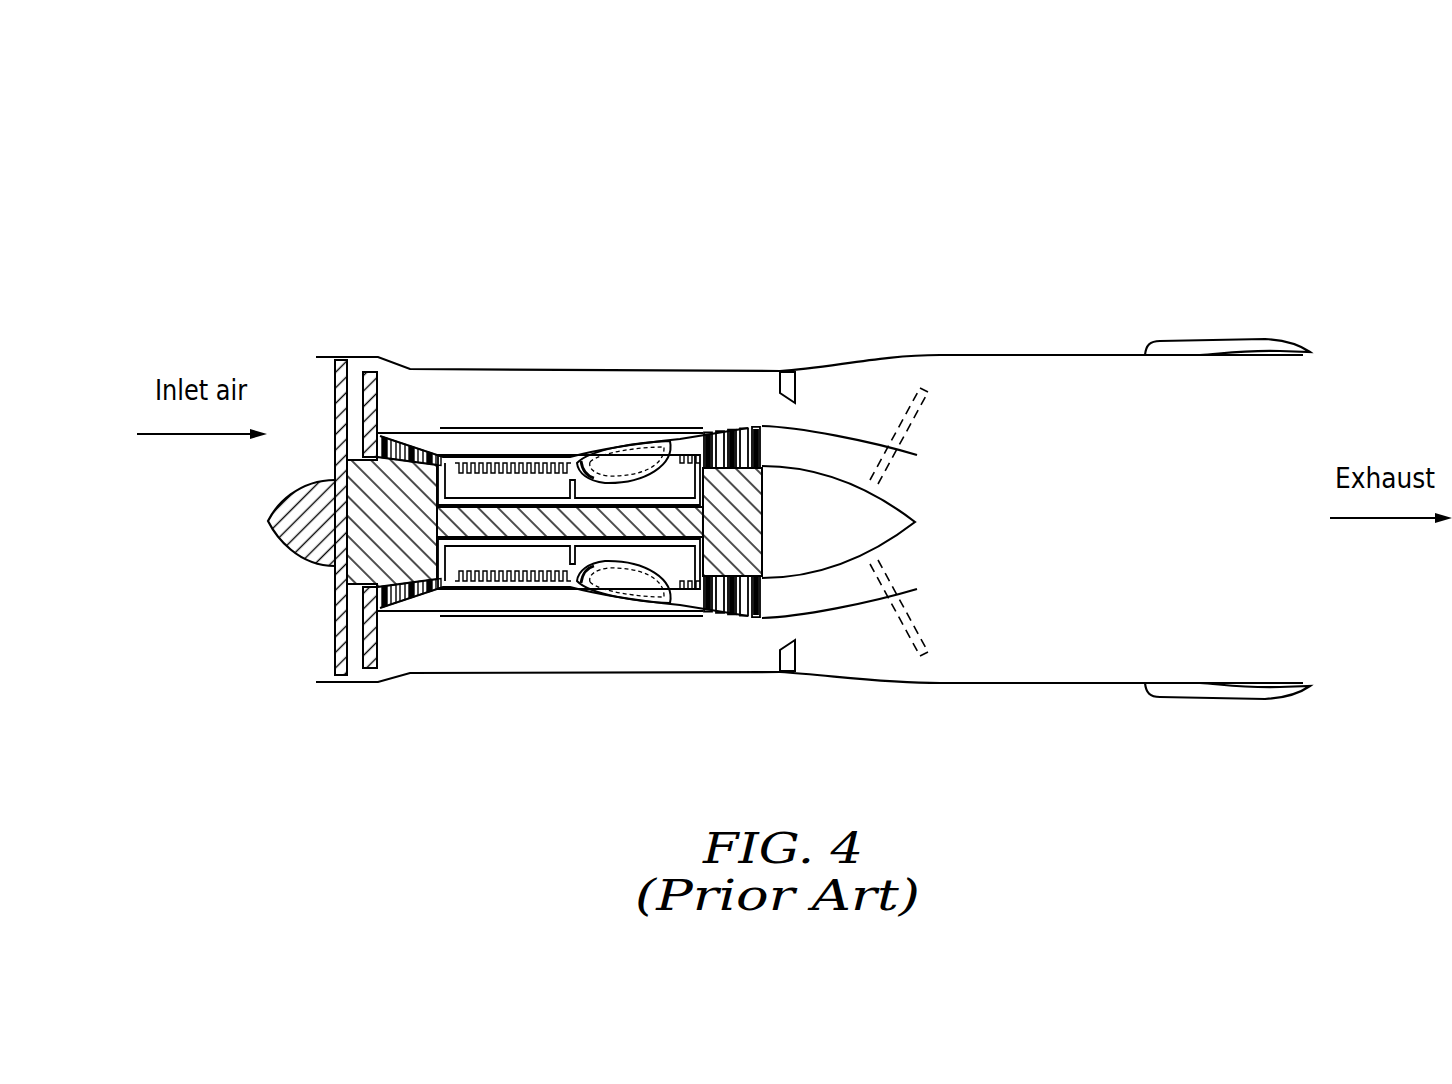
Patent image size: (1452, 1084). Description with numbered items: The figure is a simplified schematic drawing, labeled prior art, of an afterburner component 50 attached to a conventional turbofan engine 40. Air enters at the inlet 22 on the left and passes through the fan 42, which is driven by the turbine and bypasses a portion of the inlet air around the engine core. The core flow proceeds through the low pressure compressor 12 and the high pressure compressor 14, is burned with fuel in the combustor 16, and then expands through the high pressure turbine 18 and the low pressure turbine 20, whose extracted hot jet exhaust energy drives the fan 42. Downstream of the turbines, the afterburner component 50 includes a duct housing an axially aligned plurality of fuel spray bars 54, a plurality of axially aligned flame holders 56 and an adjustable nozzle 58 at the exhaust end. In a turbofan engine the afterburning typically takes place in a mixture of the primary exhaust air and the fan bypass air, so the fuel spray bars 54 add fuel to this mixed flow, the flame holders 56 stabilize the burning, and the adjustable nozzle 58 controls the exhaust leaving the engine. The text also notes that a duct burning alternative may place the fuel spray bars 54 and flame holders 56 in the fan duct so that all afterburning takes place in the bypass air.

The low pressure compressor 12 is at (412, 436).
The high pressure compressor 14 is at (512, 588).
The combustor 16 is at (627, 463).
The high pressure turbine 18 is at (668, 597).
The low pressure turbine 20 is at (730, 440).
The inlet 22 is at (220, 616).
The turbofan engine 40 is at (733, 409).
The fan 42 is at (337, 646).
The afterburner component 50 is at (1100, 638).
The fuel spray bars 54 is at (780, 657).
The flame holders 56 is at (893, 420).
The adjustable nozzle 58 is at (1200, 340).